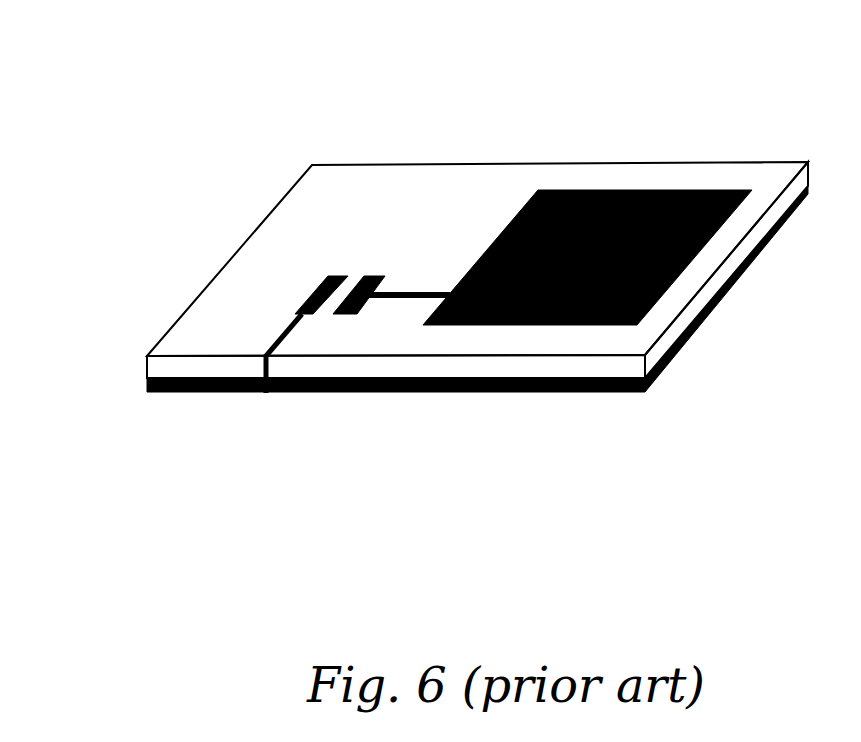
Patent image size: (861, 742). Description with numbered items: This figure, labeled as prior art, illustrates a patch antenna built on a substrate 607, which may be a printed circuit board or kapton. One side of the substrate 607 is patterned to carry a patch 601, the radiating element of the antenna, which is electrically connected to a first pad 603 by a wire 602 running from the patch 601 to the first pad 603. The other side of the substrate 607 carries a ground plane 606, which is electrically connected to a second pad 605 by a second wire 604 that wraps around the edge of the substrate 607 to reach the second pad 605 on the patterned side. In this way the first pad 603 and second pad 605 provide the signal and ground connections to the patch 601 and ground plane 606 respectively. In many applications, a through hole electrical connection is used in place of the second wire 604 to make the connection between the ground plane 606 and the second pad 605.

The patch 601 is at (600, 190).
The wire 602 is at (433, 293).
The first pad 603 is at (345, 314).
The second wire 604 is at (281, 338).
The second pad 605 is at (322, 286).
The ground plane 606 is at (222, 391).
The substrate 607 is at (308, 202).